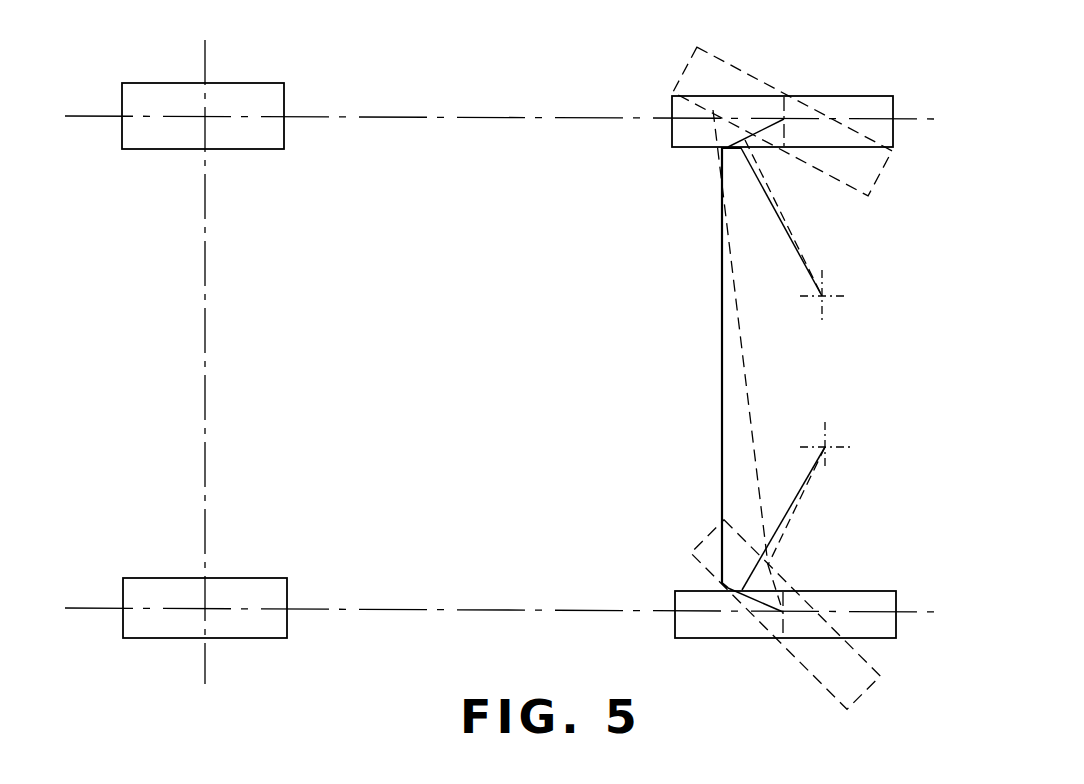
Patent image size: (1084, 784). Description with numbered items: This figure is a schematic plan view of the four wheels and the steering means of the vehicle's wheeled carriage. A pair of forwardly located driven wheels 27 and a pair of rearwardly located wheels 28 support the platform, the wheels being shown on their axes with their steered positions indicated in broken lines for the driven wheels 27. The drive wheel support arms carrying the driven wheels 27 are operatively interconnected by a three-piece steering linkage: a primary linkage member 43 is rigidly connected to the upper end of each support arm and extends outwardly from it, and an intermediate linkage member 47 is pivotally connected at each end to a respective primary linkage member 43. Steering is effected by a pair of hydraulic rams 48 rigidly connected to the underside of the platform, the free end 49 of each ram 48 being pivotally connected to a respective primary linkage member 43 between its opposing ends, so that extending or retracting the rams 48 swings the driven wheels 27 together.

The driven wheels 27 is at (878, 105).
The rearwardly located wheels 28 is at (142, 140).
The primary linkage member 43 is at (746, 598).
The intermediate linkage member 47 is at (722, 340).
The hydraulic ram 48 is at (783, 222).
The free end of ram 49 is at (738, 148).